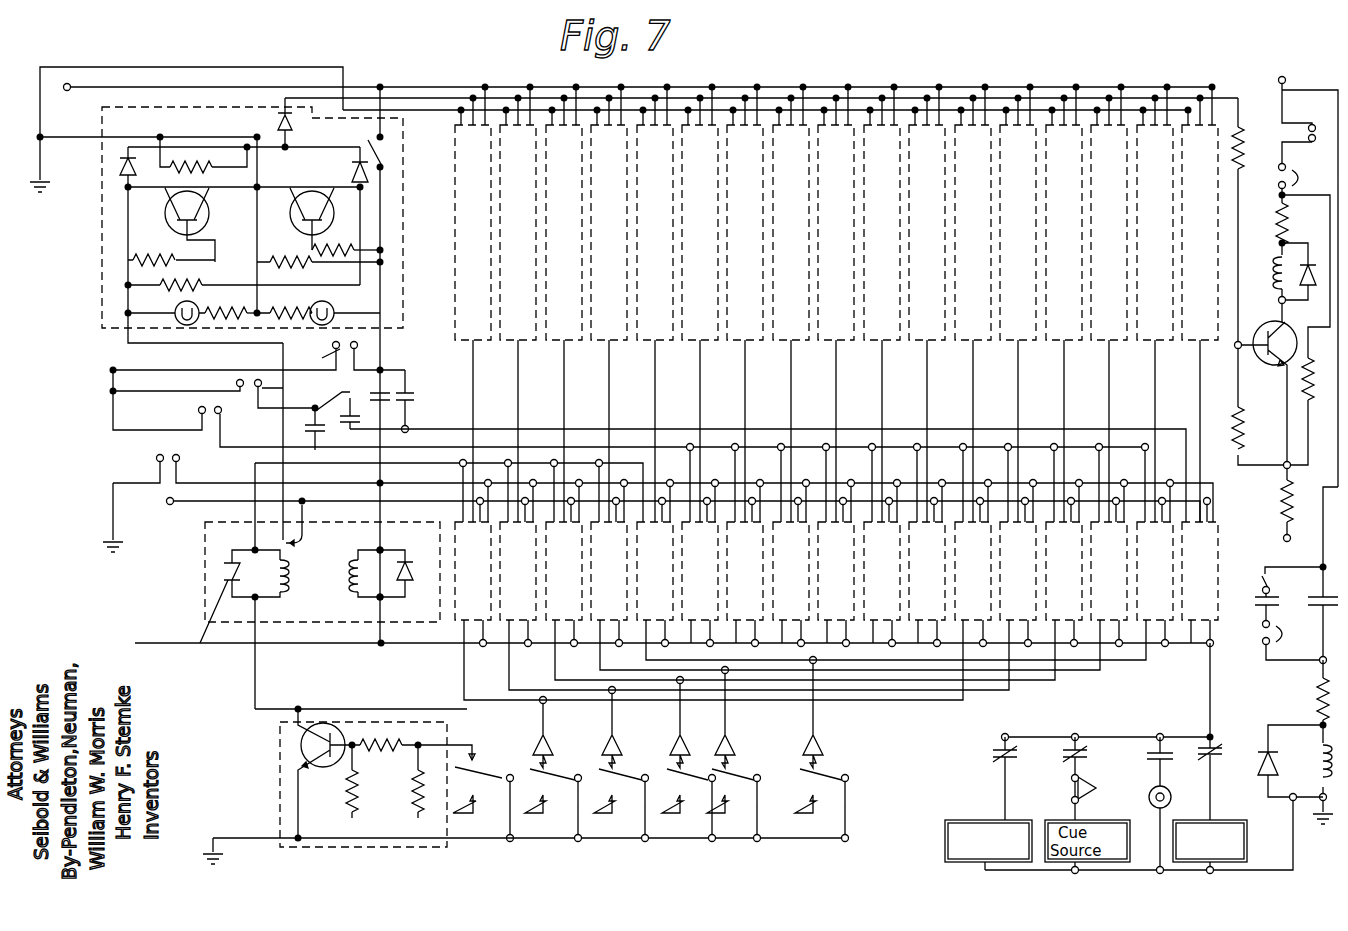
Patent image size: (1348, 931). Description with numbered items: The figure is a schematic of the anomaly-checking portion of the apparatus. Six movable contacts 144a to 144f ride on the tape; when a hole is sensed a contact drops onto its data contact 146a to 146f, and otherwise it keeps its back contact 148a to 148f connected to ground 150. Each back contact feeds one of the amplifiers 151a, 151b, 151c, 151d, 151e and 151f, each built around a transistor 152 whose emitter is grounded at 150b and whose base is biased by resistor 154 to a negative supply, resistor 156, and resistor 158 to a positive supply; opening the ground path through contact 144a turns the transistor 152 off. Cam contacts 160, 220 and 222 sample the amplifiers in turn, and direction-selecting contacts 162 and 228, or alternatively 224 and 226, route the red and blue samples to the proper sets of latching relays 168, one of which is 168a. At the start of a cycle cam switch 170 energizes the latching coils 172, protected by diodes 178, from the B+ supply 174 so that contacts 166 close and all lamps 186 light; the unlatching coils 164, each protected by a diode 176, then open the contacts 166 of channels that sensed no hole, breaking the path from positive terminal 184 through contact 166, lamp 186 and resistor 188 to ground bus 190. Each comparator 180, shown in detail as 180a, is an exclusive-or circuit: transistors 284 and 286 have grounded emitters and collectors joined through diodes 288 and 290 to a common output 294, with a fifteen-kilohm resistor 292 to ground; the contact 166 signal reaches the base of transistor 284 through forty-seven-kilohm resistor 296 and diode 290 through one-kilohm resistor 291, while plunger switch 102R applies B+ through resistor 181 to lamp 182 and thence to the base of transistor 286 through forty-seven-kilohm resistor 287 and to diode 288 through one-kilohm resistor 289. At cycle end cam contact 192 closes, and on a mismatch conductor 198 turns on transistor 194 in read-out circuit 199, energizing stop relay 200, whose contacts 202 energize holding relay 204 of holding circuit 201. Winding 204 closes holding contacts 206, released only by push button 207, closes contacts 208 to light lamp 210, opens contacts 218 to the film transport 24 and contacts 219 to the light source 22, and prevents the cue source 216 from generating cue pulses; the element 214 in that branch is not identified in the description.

The conductor 198 is at (418, 96).
The ground bus 190 is at (32, 148).
The comparator circuit 180a is at (106, 248).
The plunger switch 102R is at (388, 151).
The common output 294 is at (276, 125).
The 15K ohm resistor 292 is at (193, 150).
The output diode 288 is at (118, 170).
The transistor 284 is at (197, 220).
The 47K ohm resistor 296 is at (128, 260).
The 1K ohm resistor 291 is at (189, 288).
The lamp 186 is at (182, 328).
The resistor 188 is at (217, 322).
The transistor 286 is at (292, 200).
The output diode 290 is at (380, 179).
The 47K ohm resistor 287 is at (385, 248).
The 1K ohm resistor 289 is at (293, 262).
The resistor 181 is at (382, 296).
The lamp 182 is at (338, 325).
The cam contacts 222 is at (344, 438).
The contacts 224 is at (396, 390).
The contacts 228 is at (420, 396).
The contacts 226 is at (362, 414).
The cam contacts 160 is at (274, 388).
The contacts 162 is at (339, 413).
The cam contacts 220 is at (224, 420).
The cam switch 170 is at (175, 466).
The ground 150 is at (113, 510).
The positive voltage terminal 184 is at (164, 506).
The contacts 166 is at (290, 543).
The latching relay 168a is at (222, 572).
The unlatching coil 164 is at (271, 586).
The latching coil 172 is at (353, 583).
The diode 178 is at (400, 596).
The B+ supply 174 is at (130, 642).
The diode 176 is at (206, 642).
The transistor 152 is at (303, 740).
The amplifier 151a is at (317, 778).
The resistor 156 is at (382, 740).
The resistor 154 is at (352, 780).
The resistor 158 is at (420, 775).
The back contact 148a is at (475, 766).
The data contact 146a is at (470, 820).
The movable contact 144a is at (502, 782).
The ground 150b is at (262, 838).
The amplifier 151b is at (543, 750).
The amplifier 151c is at (613, 750).
The amplifier 151d is at (681, 750).
The amplifier 151e is at (733, 750).
The amplifier 151f is at (822, 754).
The back contact 148f is at (806, 768).
The movable contact 144f is at (846, 780).
The data contact 146f is at (795, 811).
The comparator circuits 180 is at (788, 156).
The latching relays 168 is at (780, 557).
The cam contact 192 is at (1256, 126).
The read-out circuit 199 is at (1327, 232).
The stop relay 200 is at (1270, 274).
The transistor 194 is at (1272, 362).
The holding circuit 201 is at (1262, 576).
The normally open contacts 202 is at (1304, 602).
The holding contacts 206 is at (1258, 614).
The push button 207 is at (1261, 643).
The holding relay 204 is at (1312, 764).
The light source 22 is at (1225, 820).
The normally closed contacts 219 is at (1218, 748).
The lamp 210 is at (1210, 744).
The contacts 208 is at (1152, 750).
The cue source 216 is at (1148, 800).
The photocell 214 is at (1098, 785).
The contacts 218 is at (993, 750).
The film transport system 24 is at (944, 834).